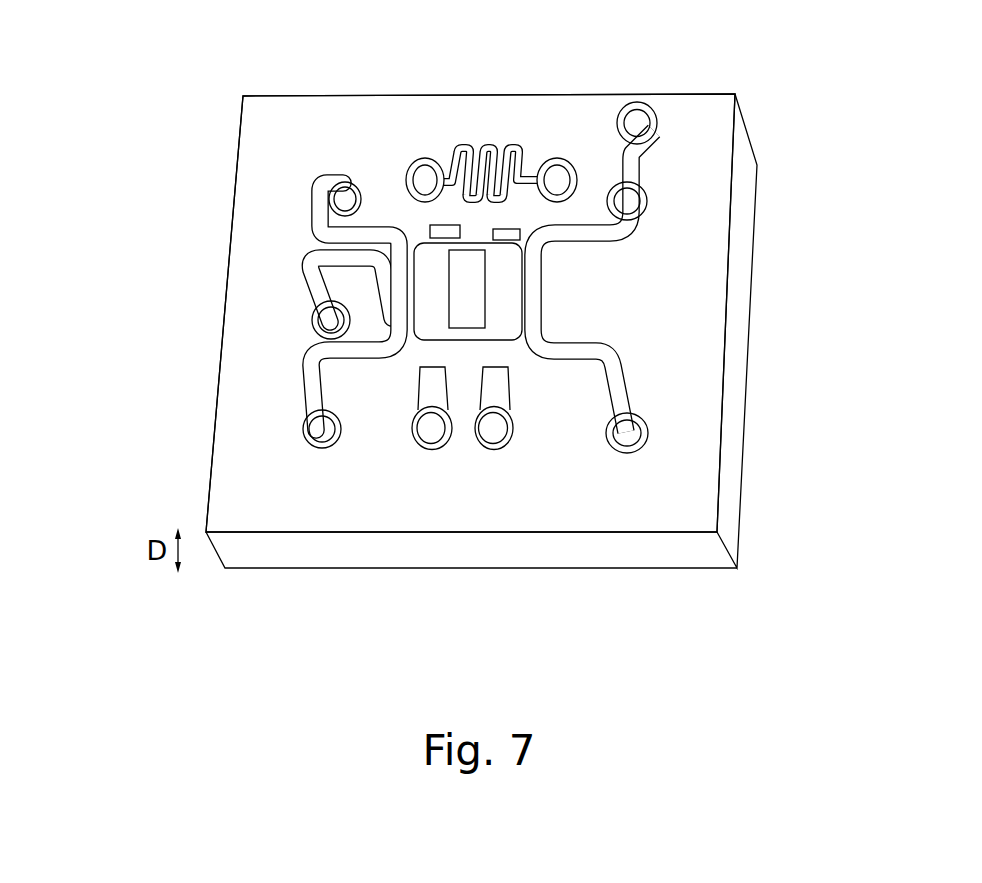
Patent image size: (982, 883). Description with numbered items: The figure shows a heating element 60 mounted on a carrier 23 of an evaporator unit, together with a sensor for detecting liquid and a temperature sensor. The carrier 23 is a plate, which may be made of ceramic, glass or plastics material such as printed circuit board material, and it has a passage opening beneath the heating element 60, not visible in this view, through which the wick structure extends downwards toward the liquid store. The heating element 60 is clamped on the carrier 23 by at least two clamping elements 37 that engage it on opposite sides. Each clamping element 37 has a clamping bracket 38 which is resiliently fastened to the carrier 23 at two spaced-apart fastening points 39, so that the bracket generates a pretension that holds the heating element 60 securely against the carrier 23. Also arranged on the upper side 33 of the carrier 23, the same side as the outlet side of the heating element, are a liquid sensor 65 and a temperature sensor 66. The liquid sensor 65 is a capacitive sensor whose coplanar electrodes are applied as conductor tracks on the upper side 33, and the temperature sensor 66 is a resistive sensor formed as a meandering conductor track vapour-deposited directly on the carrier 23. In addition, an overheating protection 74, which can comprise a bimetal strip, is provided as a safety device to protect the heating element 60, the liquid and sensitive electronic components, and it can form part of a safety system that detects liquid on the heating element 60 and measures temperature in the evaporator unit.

The carrier 23 is at (245, 507).
The upper side of the carrier 33 is at (537, 470).
The clamping element 37 is at (287, 361).
The clamping bracket 38 is at (373, 243).
The fastening point 39 is at (343, 200).
The heating element 60 is at (505, 308).
The liquid sensor 65 is at (432, 452).
The temperature sensor 66 is at (490, 130).
The overheating protection 74 is at (668, 134).